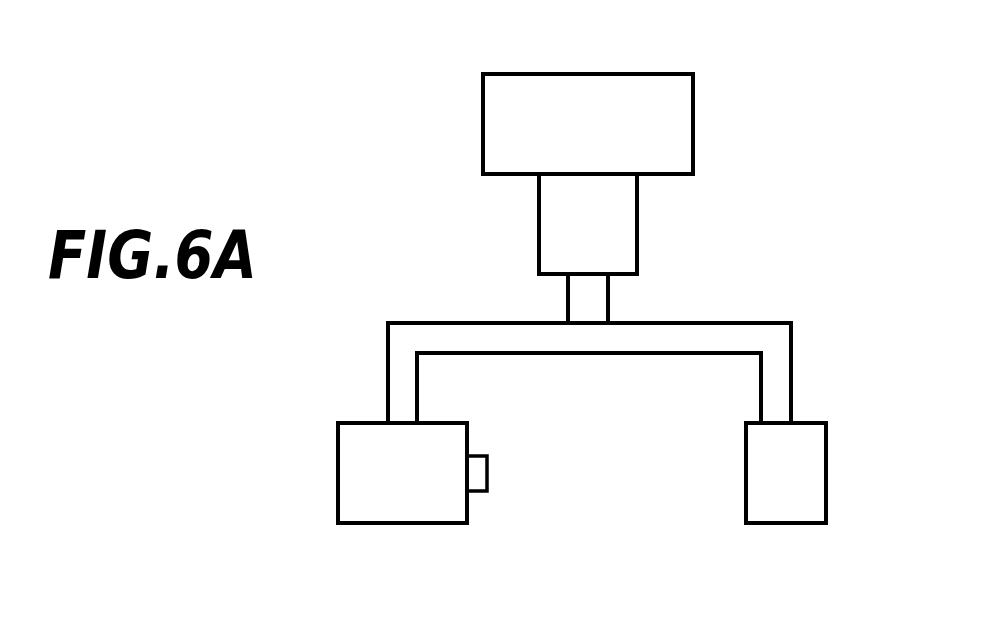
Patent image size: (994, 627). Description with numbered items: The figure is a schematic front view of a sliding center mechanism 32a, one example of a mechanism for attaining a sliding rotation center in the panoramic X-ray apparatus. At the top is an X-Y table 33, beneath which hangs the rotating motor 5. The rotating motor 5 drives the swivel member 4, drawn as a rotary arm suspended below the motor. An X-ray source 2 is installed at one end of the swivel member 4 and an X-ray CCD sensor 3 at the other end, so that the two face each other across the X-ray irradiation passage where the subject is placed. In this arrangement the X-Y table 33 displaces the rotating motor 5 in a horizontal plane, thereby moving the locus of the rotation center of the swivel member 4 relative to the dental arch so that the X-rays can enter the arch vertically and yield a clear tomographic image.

The sliding center mechanism 32a is at (405, 103).
The X-Y table 33 is at (685, 152).
The rotating motor 5 is at (630, 250).
The swivel member 4 is at (438, 328).
The X-ray source 2 is at (347, 497).
The X-ray CCD sensor 3 is at (820, 497).